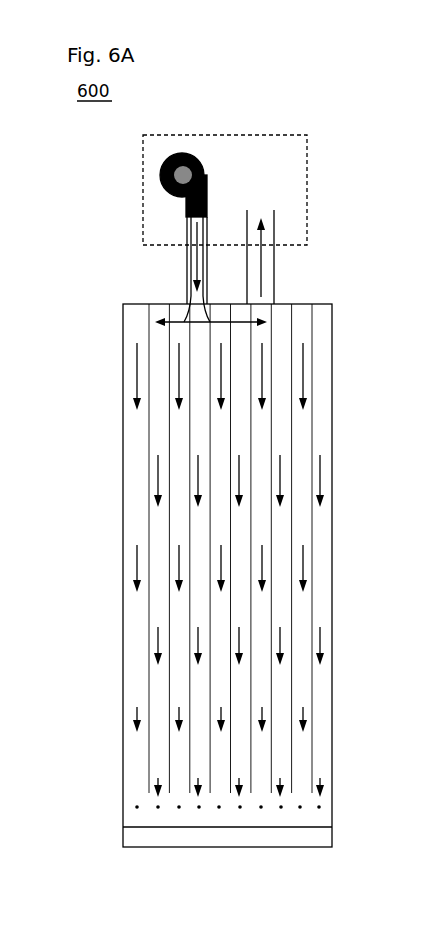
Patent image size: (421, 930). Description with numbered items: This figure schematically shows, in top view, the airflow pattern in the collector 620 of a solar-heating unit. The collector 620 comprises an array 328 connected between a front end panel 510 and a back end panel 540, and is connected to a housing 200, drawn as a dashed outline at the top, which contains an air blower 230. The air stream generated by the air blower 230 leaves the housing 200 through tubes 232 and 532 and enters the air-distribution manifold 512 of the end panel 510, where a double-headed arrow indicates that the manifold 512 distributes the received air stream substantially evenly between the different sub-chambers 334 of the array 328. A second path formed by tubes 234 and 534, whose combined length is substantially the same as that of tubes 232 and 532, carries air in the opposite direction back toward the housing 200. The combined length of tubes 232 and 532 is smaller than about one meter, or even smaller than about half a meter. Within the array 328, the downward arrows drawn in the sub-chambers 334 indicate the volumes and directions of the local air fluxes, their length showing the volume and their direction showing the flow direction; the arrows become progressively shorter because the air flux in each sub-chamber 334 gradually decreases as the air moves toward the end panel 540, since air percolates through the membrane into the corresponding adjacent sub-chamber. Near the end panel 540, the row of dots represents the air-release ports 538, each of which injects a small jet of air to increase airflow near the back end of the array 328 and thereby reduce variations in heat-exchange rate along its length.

The housing 200 is at (307, 158).
The air blower 230 is at (206, 173).
The tube 232 is at (187, 238).
The tube 234 is at (281, 230).
The tube 532 is at (187, 272).
The tube 534 is at (274, 277).
The air-distribution manifold 512 is at (313, 313).
The end panel 510 is at (113, 343).
The collector 620 is at (105, 438).
The array 328 is at (332, 557).
The sub-chamber 334 is at (326, 400).
The air-release port 538 is at (157, 812).
The end panel 540 is at (325, 838).